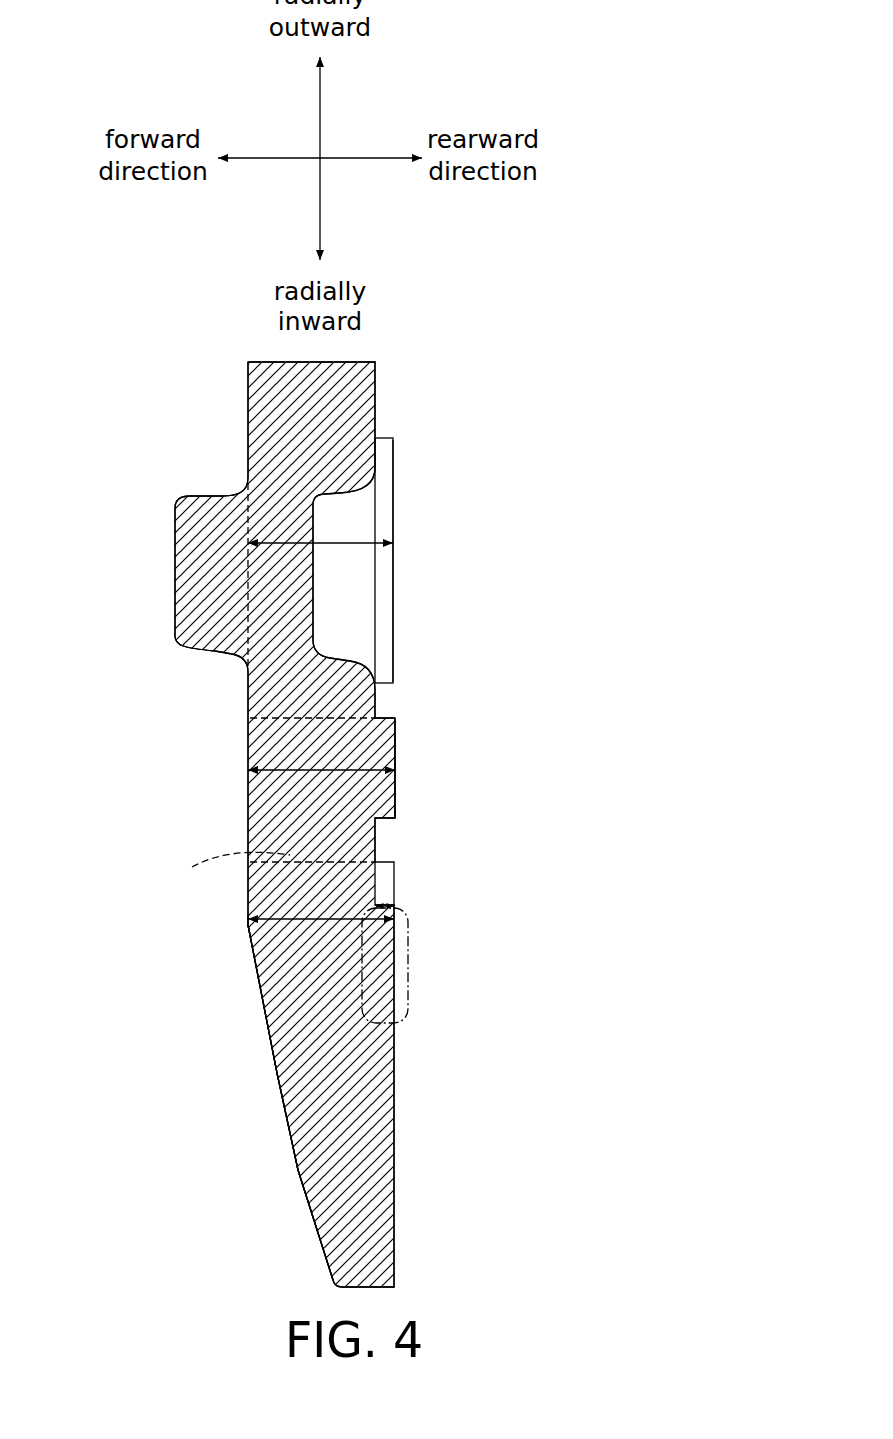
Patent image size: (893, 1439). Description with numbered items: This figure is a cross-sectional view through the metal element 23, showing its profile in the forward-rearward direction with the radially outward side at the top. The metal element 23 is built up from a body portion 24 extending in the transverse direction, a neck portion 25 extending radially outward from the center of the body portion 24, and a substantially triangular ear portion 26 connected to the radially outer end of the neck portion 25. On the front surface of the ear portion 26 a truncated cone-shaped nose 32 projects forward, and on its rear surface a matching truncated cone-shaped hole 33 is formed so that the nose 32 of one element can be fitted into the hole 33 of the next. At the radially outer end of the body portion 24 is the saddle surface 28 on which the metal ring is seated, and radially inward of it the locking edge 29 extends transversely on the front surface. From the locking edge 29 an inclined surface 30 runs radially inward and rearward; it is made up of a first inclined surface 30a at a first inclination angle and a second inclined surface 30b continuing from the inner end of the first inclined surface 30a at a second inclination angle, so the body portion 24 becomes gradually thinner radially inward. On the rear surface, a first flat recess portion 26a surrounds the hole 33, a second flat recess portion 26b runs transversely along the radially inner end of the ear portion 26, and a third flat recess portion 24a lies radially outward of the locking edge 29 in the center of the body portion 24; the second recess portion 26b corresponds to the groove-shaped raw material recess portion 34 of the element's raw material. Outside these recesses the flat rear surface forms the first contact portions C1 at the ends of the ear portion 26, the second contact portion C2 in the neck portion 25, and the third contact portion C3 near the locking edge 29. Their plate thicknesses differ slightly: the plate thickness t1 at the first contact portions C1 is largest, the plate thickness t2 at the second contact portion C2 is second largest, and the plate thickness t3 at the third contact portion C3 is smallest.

The metal element 23 is at (212, 385).
The body portion 24 is at (410, 1131).
The third flat recess portion 24a is at (377, 848).
The neck portion 25 is at (237, 797).
The ear portion 26 is at (237, 455).
The first flat recess portion 26a is at (377, 408).
The second flat recess portion 26b is at (391, 686).
The raw material recess portion 34 is at (377, 708).
The saddle surface 28 is at (261, 871).
The locking edge 29 is at (248, 928).
The inclined surface 30 is at (190, 1075).
The first inclined surface 30a is at (277, 1073).
The second inclined surface 30b is at (300, 1170).
The nose 32 is at (175, 571).
The hole 33 is at (313, 584).
The first contact portion C1 is at (395, 512).
The second contact portion C2 is at (397, 781).
The third contact portion C3 is at (410, 960).
The plate thickness of first contact portion t1 is at (325, 543).
The plate thickness of second contact portion t2 is at (396, 734).
The plate thickness of third contact portion t3 is at (372, 905).